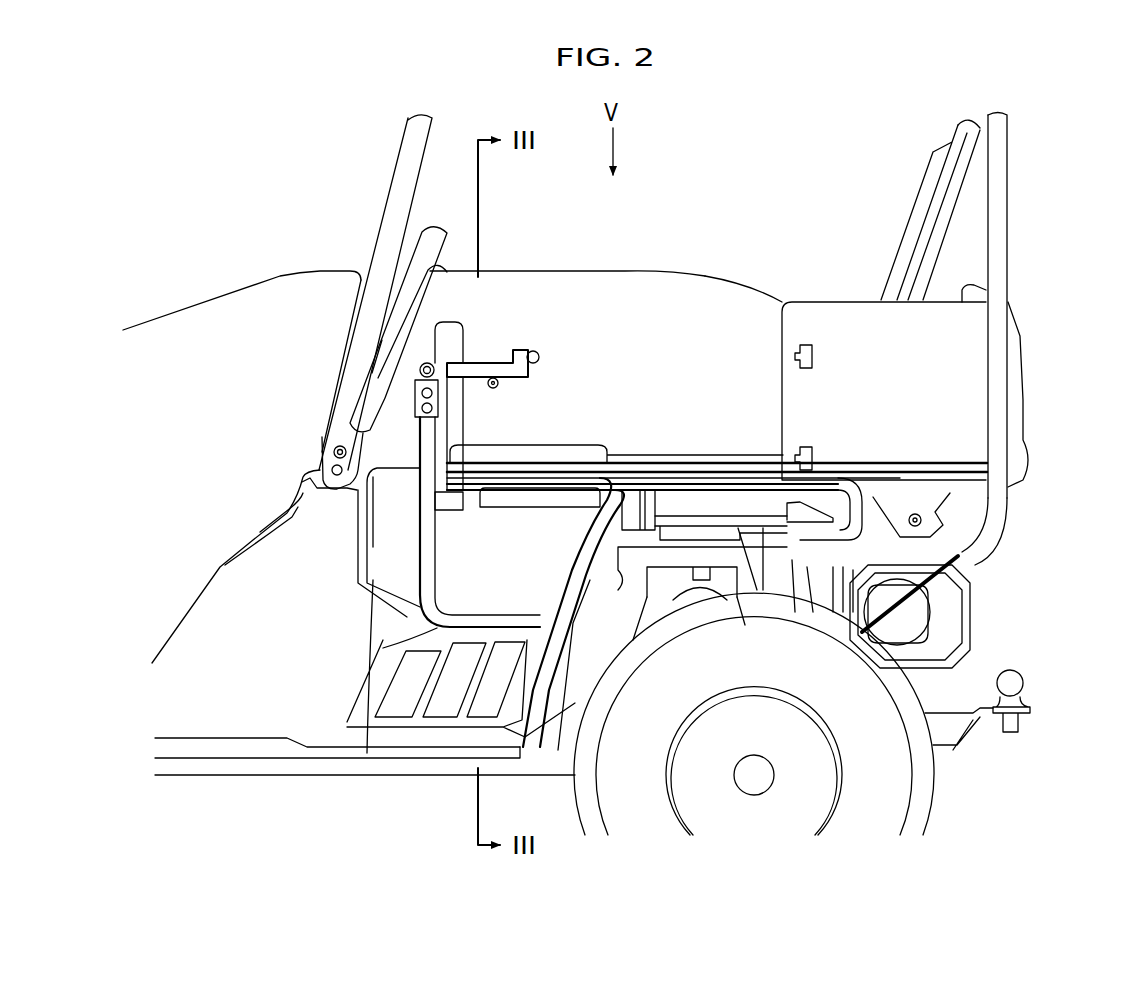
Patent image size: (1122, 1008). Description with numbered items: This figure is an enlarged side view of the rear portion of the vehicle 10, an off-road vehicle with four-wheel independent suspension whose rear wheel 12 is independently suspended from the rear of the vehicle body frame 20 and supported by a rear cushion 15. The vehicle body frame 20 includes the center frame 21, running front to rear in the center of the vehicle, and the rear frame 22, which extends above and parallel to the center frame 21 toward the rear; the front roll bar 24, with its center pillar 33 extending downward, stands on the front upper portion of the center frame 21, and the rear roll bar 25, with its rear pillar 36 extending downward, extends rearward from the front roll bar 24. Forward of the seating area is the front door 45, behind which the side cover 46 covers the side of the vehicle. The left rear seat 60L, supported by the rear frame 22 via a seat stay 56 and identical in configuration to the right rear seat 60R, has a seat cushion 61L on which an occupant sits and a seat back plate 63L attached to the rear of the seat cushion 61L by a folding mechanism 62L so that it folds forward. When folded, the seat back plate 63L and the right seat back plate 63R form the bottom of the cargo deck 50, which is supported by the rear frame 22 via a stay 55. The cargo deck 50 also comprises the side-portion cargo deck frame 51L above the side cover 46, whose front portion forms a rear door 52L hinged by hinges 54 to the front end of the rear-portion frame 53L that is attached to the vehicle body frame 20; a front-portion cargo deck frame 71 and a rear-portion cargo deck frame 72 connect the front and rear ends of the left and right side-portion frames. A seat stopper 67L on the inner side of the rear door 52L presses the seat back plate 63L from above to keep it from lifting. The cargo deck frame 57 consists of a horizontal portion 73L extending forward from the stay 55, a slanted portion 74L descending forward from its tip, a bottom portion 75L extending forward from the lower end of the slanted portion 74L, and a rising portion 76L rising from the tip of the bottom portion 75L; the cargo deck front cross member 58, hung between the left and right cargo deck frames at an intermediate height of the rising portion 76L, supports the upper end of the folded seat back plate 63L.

The vehicle 10 is at (216, 184).
The rear wheel 12 is at (937, 798).
The rear cushion 15 is at (660, 640).
The vehicle body frame 20 is at (320, 782).
The center frame 21 is at (245, 778).
The rear frame 22 is at (940, 613).
The front roll bar 24 is at (402, 140).
The rear roll bar 25 is at (1012, 165).
The center pillar 33 is at (394, 205).
The rear pillar 36 is at (1012, 205).
The front door 45 is at (207, 303).
The side cover 46 is at (180, 693).
The cargo deck 50 is at (563, 250).
The side-portion cargo deck frame 51L is at (655, 177).
The rear door 52L is at (640, 268).
The rear-portion frame 53L is at (822, 300).
The hinges 54 is at (812, 357).
The stay 55 is at (945, 507).
The seat stay 56 is at (728, 533).
The cargo deck frame 57 is at (370, 753).
The cargo deck front cross member 58 is at (440, 533).
The left rear seat 60L is at (665, 458).
The right rear seat 60R is at (945, 135).
The seat cushion 61L is at (575, 715).
The folding mechanism 62L is at (843, 505).
The seat back plate 63L is at (590, 446).
The seat back plate 63R is at (948, 229).
The seat stopper 67L is at (540, 455).
The front-portion cargo deck frame 71 is at (463, 347).
The rear-portion cargo deck frame 72 is at (1027, 420).
The horizontal portion 73L is at (733, 458).
The slanted portion 74L is at (575, 530).
The bottom portion 75L is at (455, 688).
The rising portion 76L is at (420, 438).